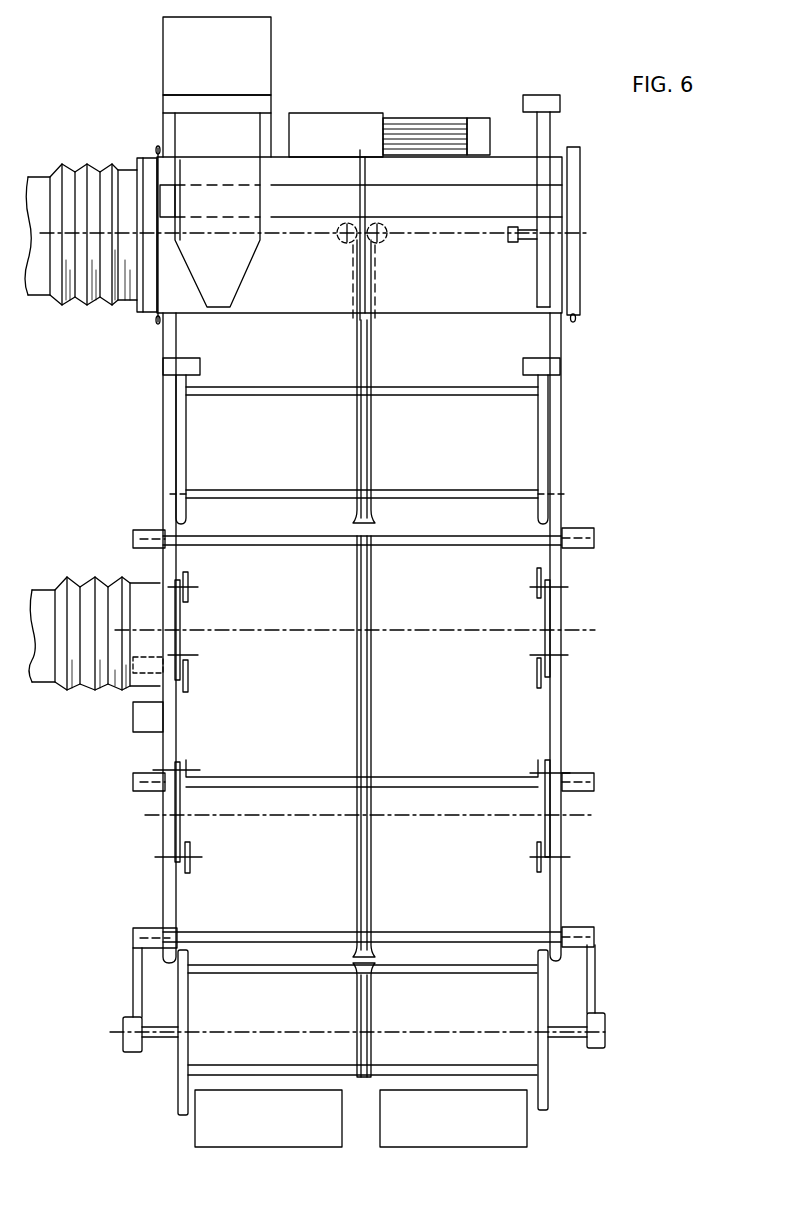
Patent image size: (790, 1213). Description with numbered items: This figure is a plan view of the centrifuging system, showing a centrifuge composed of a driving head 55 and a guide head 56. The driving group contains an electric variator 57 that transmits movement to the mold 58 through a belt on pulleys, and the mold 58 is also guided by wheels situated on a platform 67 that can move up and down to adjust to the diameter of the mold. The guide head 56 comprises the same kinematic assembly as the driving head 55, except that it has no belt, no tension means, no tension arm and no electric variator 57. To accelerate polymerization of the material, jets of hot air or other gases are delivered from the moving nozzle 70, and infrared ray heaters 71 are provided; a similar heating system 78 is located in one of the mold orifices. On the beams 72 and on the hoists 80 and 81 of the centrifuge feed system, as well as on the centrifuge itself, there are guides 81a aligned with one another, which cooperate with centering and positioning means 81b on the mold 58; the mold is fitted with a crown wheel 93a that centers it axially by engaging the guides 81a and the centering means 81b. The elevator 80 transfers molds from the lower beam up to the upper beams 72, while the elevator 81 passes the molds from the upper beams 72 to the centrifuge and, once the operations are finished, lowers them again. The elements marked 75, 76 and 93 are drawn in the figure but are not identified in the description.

The driving head 55 is at (248, 22).
The guide head 56 is at (545, 100).
The electric variator 57 is at (433, 130).
The mold 58 is at (556, 272).
The platform 67 is at (157, 320).
The moving nozzle 70 is at (68, 185).
The infrared ray heaters 71 is at (450, 170).
The upper beams 72 is at (168, 462).
The clamp 75 is at (540, 598).
The clamp bar 76 is at (548, 656).
The heating system 78 is at (90, 590).
The elevator 80 is at (600, 1026).
The elevator 81 is at (545, 468).
The guides 81a is at (366, 446).
The centering and positioning means 81b is at (343, 246).
The seal strip 93 is at (156, 150).
The crown wheel 93a is at (362, 150).